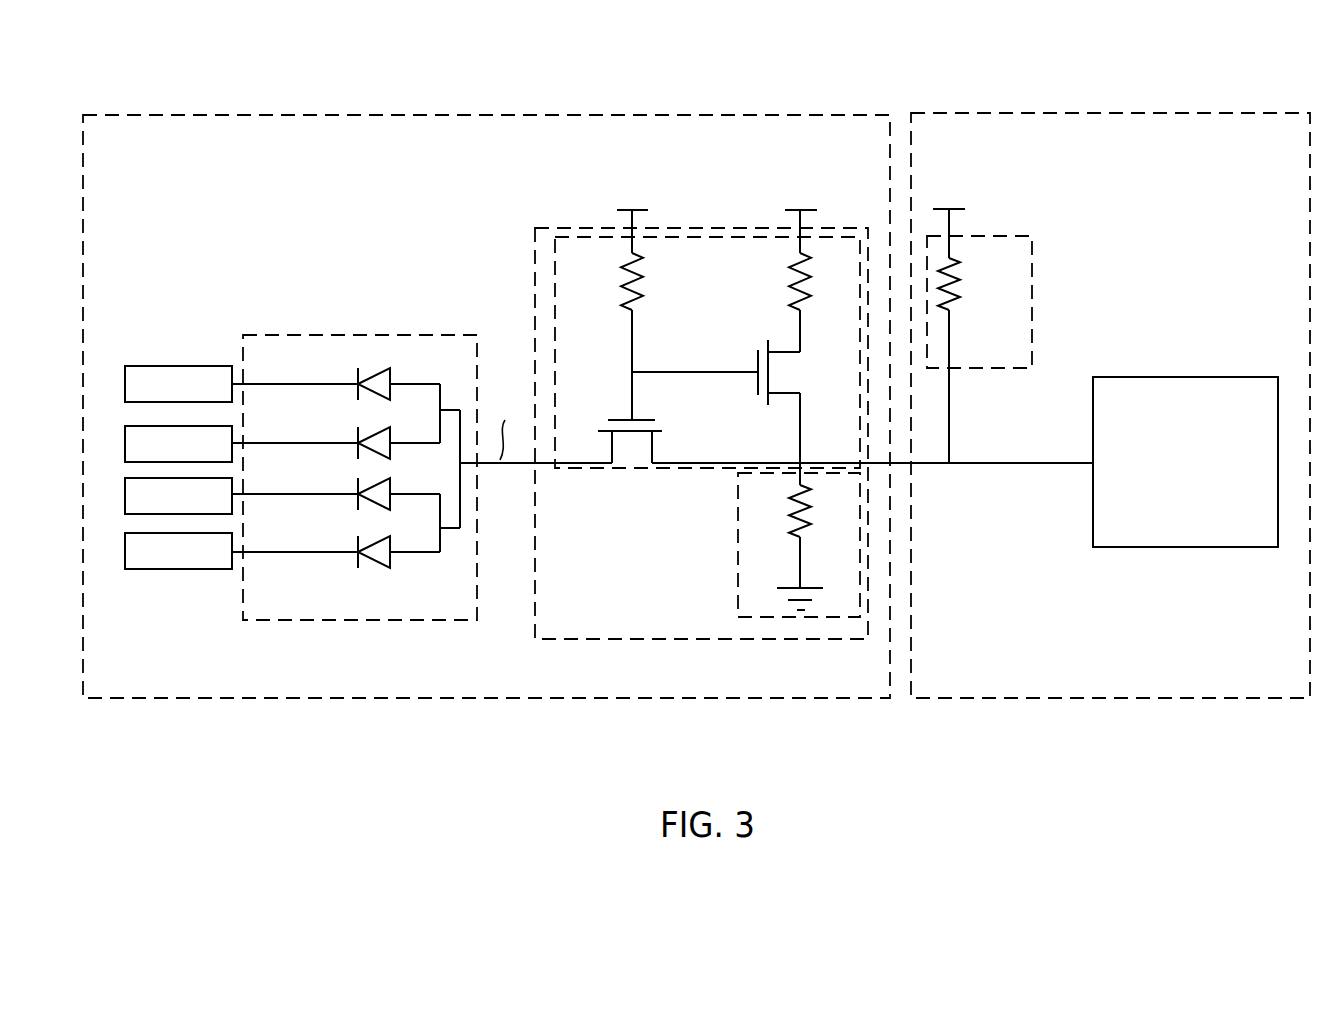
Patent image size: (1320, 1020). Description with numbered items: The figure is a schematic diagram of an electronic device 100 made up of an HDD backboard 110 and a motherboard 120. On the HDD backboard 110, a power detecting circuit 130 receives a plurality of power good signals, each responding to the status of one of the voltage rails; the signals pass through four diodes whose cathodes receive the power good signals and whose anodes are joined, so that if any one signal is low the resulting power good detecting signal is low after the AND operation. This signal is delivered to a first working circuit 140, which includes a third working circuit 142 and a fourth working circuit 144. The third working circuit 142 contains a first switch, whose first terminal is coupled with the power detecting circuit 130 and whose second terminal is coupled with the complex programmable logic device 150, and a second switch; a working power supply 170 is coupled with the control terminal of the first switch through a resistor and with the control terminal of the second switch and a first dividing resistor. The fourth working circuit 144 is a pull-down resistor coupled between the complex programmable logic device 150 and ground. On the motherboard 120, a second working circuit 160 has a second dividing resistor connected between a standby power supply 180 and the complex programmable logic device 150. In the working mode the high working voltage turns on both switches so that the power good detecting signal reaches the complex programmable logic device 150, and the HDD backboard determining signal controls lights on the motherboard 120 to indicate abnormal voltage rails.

The electronic device 100 is at (113, 47).
The HDD backboard 110 is at (147, 164).
The motherboard 120 is at (1289, 149).
The power detecting circuit 130 is at (316, 604).
The first working circuit 140 is at (591, 609).
The third working circuit 142 is at (604, 269).
The fourth working circuit 144 is at (784, 584).
The complex programmable logic device 150 is at (1199, 407).
The second working circuit 160 is at (1021, 359).
The working power supply 170 is at (792, 202).
The standby power supply 180 is at (958, 205).